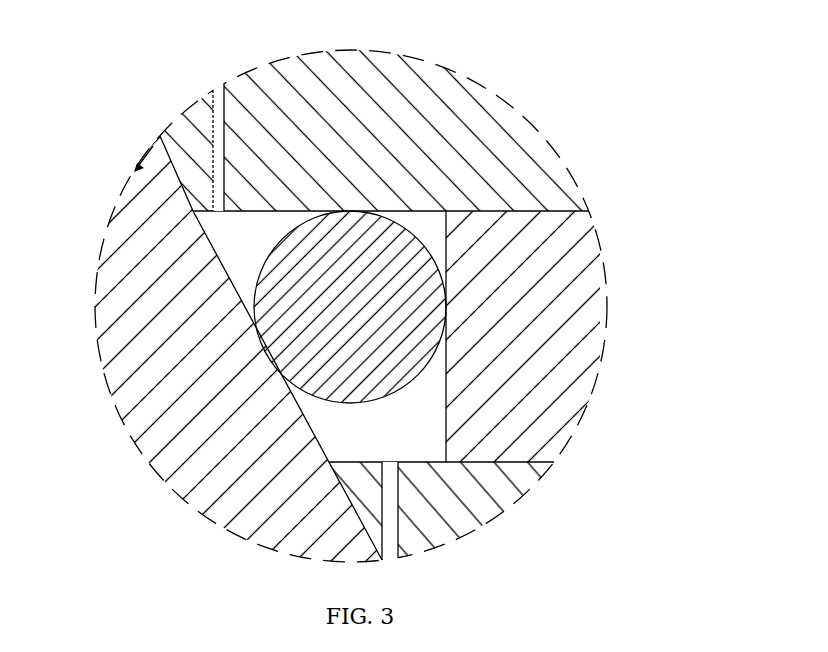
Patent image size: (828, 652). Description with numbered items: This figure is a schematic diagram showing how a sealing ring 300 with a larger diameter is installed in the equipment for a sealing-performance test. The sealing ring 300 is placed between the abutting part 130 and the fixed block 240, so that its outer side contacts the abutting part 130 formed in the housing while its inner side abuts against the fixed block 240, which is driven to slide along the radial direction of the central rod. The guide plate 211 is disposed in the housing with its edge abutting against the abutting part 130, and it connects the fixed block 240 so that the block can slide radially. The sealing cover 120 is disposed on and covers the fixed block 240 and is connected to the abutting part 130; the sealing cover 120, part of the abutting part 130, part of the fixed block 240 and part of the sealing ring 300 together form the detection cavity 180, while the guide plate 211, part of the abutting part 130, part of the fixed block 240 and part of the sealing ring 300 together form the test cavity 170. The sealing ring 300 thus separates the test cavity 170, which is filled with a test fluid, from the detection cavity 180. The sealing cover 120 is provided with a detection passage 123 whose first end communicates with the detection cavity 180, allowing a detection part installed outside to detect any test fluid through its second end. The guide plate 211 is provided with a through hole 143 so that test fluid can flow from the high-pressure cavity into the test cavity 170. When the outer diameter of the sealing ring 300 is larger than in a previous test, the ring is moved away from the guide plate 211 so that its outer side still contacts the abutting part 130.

The sealing cover 120 is at (477, 155).
The detection passage 123 is at (214, 90).
The abutting part 130 is at (122, 195).
The through hole 143 is at (393, 538).
The test cavity 170 is at (347, 435).
The detection cavity 180 is at (237, 248).
The guide plate 211 is at (490, 478).
The fixed block 240 is at (517, 308).
The sealing ring 300 is at (367, 390).